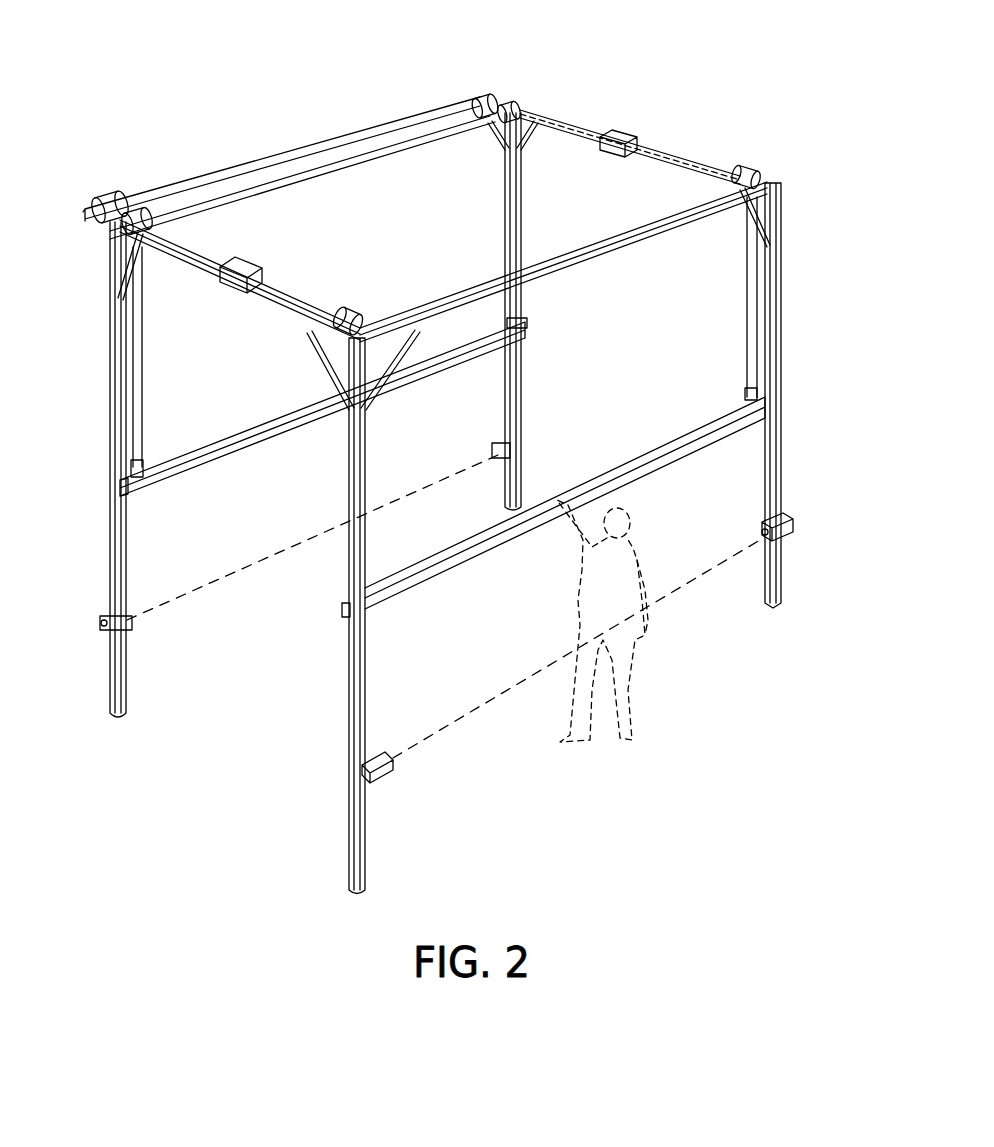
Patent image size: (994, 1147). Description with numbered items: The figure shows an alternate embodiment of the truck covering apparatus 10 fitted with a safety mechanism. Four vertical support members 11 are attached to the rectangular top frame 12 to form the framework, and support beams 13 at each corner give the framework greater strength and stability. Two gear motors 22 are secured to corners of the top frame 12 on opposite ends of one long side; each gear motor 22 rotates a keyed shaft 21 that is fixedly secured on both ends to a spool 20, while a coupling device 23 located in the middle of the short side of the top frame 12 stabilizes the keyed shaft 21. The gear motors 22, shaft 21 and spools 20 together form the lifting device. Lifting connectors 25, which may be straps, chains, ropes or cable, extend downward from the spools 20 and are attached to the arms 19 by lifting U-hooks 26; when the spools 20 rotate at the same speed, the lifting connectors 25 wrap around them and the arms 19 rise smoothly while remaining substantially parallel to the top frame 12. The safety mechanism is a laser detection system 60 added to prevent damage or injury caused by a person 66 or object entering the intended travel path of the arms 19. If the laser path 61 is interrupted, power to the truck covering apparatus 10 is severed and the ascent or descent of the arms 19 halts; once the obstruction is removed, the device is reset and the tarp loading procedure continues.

The truck covering apparatus 10 is at (700, 84).
The vertical support members 11 is at (520, 182).
The top frame 12 is at (340, 168).
The support beams 13 is at (140, 284).
The arms 19 is at (270, 420).
The spool 20 is at (505, 103).
The keyed shaft 21 is at (657, 152).
The gear motor 22 is at (108, 192).
The coupling device 23 is at (243, 260).
The lifting connector 25 is at (142, 370).
The lifting U-hook 26 is at (140, 460).
The laser detection system 60 is at (100, 625).
The laser path 61 is at (420, 487).
The person 66 is at (632, 662).